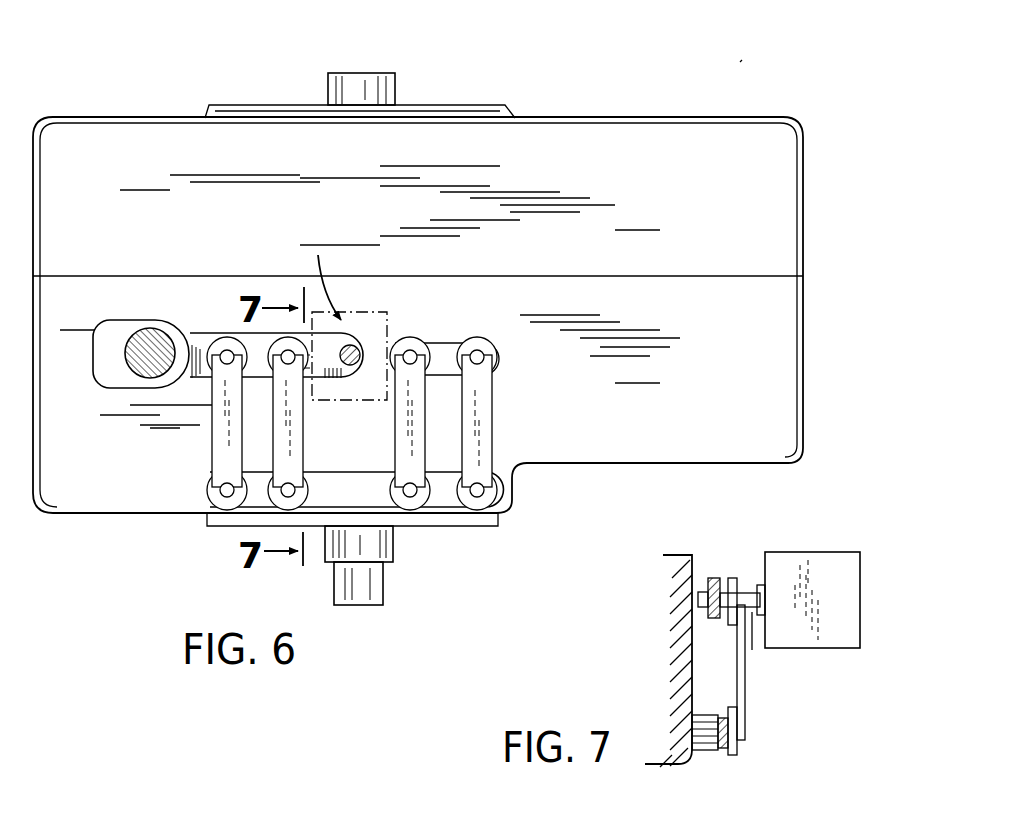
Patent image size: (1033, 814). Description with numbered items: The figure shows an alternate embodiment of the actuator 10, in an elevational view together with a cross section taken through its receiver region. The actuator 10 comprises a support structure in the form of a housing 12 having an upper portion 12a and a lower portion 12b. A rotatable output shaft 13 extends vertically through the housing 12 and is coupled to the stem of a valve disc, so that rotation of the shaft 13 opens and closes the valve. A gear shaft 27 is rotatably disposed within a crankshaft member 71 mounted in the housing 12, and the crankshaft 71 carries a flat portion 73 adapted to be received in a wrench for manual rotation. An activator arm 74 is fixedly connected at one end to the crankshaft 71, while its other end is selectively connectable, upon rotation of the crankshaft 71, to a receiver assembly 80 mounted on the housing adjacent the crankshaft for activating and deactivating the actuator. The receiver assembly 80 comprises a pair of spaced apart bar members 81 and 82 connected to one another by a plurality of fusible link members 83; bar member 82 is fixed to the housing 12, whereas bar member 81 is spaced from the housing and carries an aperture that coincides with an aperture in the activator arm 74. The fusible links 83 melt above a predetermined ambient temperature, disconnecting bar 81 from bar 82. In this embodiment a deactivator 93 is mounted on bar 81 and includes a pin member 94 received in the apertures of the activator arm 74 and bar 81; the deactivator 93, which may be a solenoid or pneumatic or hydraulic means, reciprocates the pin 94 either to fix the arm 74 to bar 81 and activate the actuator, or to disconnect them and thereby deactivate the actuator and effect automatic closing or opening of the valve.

In FIG. 6, the actuator 10 is at (738, 66).
In FIG. 6, the housing 12 is at (812, 274).
In FIG. 6, the upper portion of housing 12a is at (637, 216).
In FIG. 6, the lower portion of housing 12b is at (638, 369).
In FIG. 7, the lower portion of housing 12b is at (697, 560).
In FIG. 6, the rotatable output shaft 13 is at (382, 96).
In FIG. 6, the gear shaft 27 is at (147, 340).
In FIG. 6, the crankshaft member 71 is at (115, 357).
In FIG. 6, the flat portion 73 is at (134, 390).
In FIG. 6, the activator arm 74 is at (196, 380).
In FIG. 7, the activator arm 74 is at (707, 622).
In FIG. 6, the receiver assembly 80 is at (193, 456).
In FIG. 7, the receiver assembly 80 is at (750, 681).
In FIG. 6, the bar member 81 is at (368, 351).
In FIG. 7, the bar member 81 is at (722, 580).
In FIG. 6, the bar member 82 is at (376, 493).
In FIG. 7, the bar member 82 is at (723, 752).
In FIG. 6, the fusible link members 83 is at (283, 428).
In FIG. 7, the deactivator 93 is at (830, 562).
In FIG. 7, the pin member 94 is at (752, 615).